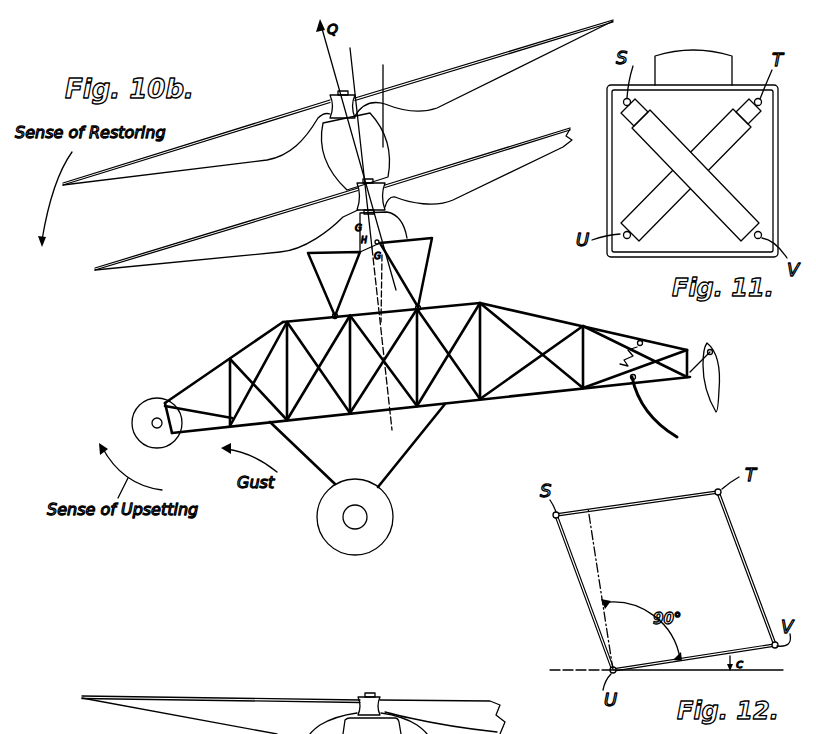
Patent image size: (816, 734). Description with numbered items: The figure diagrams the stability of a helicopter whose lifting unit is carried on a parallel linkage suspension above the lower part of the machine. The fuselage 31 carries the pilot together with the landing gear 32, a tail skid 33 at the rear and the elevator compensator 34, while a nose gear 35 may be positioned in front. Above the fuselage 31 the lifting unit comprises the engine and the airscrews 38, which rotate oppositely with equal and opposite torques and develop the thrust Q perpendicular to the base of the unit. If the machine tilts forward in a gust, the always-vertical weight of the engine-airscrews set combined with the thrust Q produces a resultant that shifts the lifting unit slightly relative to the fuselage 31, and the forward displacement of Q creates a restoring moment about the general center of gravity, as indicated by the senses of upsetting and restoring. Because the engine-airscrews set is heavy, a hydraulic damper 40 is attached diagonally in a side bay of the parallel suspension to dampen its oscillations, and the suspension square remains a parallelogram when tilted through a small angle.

In FIG. 10B, the fuselage 31 is at (233, 356).
In FIG. 10B, the landing gear 32 is at (388, 500).
In FIG. 10B, the tail skid 33 is at (636, 407).
In FIG. 10B, the elevator compensator 34 is at (714, 381).
In FIG. 10B, the nose gear 35 is at (168, 443).
In FIG. 10B, the airscrews 38 is at (277, 210).
In FIG. 11, the hydraulic damper 40 is at (730, 157).